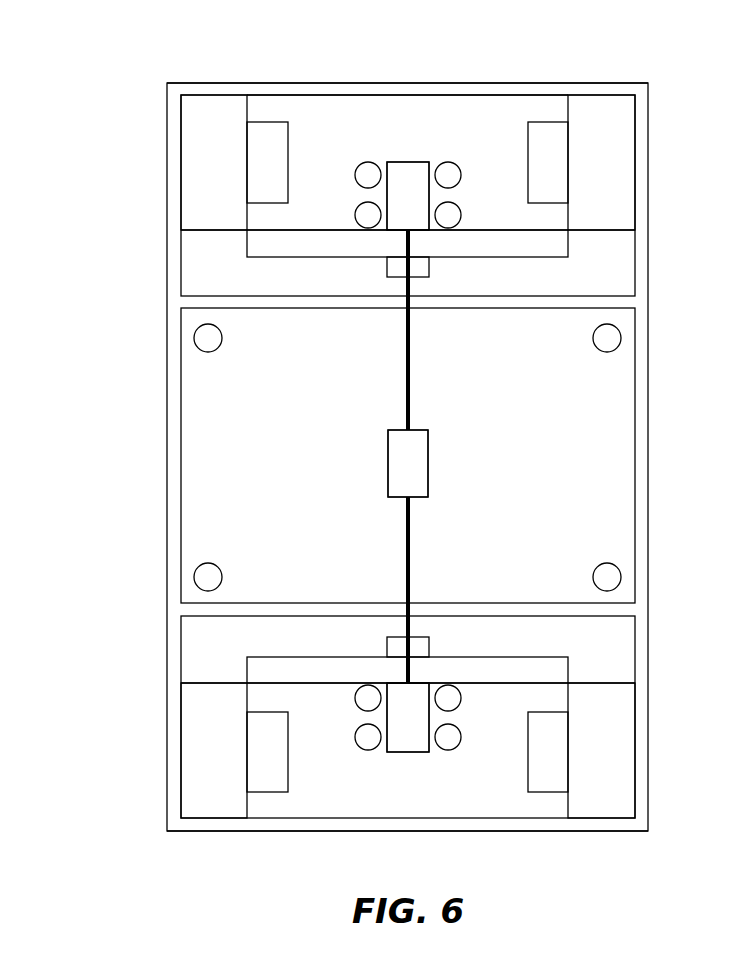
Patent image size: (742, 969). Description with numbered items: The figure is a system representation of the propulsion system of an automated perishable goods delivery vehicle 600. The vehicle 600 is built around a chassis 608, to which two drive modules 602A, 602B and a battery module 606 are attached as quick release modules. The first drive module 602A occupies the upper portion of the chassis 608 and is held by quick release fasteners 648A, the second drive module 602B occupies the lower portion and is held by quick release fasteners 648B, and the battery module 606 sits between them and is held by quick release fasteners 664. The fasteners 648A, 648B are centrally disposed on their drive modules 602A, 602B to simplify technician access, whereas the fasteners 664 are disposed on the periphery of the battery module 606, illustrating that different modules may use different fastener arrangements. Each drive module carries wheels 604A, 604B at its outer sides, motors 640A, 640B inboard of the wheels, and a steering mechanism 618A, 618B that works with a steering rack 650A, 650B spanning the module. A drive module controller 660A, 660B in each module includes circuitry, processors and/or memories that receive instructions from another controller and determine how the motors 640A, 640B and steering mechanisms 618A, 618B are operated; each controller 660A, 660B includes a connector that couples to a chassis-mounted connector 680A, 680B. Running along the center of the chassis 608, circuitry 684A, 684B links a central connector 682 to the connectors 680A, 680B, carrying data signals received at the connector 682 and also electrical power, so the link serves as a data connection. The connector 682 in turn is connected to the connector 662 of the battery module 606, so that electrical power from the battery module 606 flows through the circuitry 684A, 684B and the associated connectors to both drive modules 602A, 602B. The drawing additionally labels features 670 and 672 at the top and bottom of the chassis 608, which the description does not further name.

The vehicle 600 is at (145, 68).
The drive module 602A is at (457, 96).
The drive module 602B is at (541, 818).
The wheels 604A is at (216, 95).
The wheels 604B is at (635, 752).
The battery module 606 is at (635, 483).
The chassis 608 is at (648, 258).
The steering mechanism 618A is at (429, 268).
The steering mechanism 618B is at (388, 643).
The motor 640A is at (288, 122).
The motor 640B is at (275, 792).
The quick release fasteners 648A is at (363, 162).
The quick release fasteners 648B is at (377, 710).
The steering rack 650A is at (247, 242).
The steering rack 650B is at (568, 671).
The drive module controller 660A is at (401, 162).
The connector 680A is at (408, 196).
The drive module controller 660B is at (429, 704).
The connector 680B is at (408, 717).
The connector 662 is at (428, 457).
The connector 682 is at (408, 463).
The quick release fasteners 664 is at (222, 338).
The top wall 670 is at (605, 83).
The bottom wall 672 is at (613, 831).
The circuitry 684A is at (431, 330).
The circuitry 684B is at (431, 590).